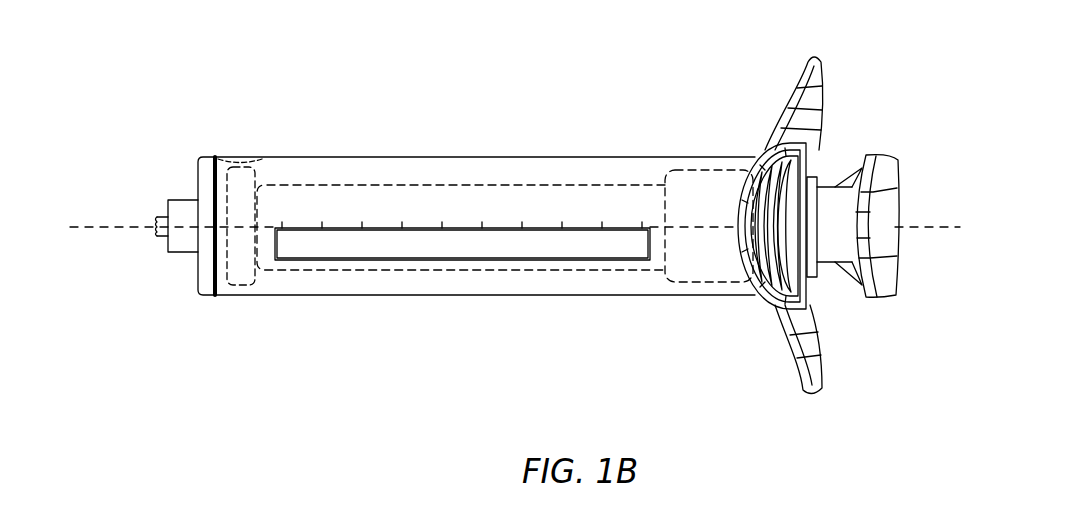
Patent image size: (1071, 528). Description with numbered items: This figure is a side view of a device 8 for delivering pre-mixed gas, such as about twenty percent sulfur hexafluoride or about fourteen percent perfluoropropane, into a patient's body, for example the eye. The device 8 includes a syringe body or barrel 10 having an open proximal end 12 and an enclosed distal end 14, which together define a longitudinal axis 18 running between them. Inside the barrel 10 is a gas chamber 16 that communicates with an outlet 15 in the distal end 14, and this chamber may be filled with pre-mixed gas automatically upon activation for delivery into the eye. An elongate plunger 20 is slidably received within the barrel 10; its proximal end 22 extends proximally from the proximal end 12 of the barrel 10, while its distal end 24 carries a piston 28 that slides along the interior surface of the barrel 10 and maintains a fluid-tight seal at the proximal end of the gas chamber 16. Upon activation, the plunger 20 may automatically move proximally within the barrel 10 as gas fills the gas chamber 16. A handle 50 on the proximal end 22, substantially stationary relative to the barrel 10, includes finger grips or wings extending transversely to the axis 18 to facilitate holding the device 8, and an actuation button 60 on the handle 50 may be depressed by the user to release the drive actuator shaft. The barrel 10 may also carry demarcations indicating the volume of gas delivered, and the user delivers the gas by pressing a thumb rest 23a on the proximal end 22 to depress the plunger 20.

The device 8 is at (690, 60).
The barrel 10 is at (562, 310).
The open proximal end 12 is at (757, 300).
The enclosed distal end 14 is at (220, 297).
The outlet 15 is at (155, 230).
The gas chamber 16 is at (344, 170).
The longitudinal axis 18 is at (112, 226).
The plunger 20 is at (452, 274).
The proximal end of plunger 22 is at (828, 186).
The thumb rest 23a is at (895, 208).
The distal end of plunger 24 is at (260, 268).
The piston 28 is at (225, 178).
The handle 50 is at (838, 80).
The actuation button 60 is at (812, 305).